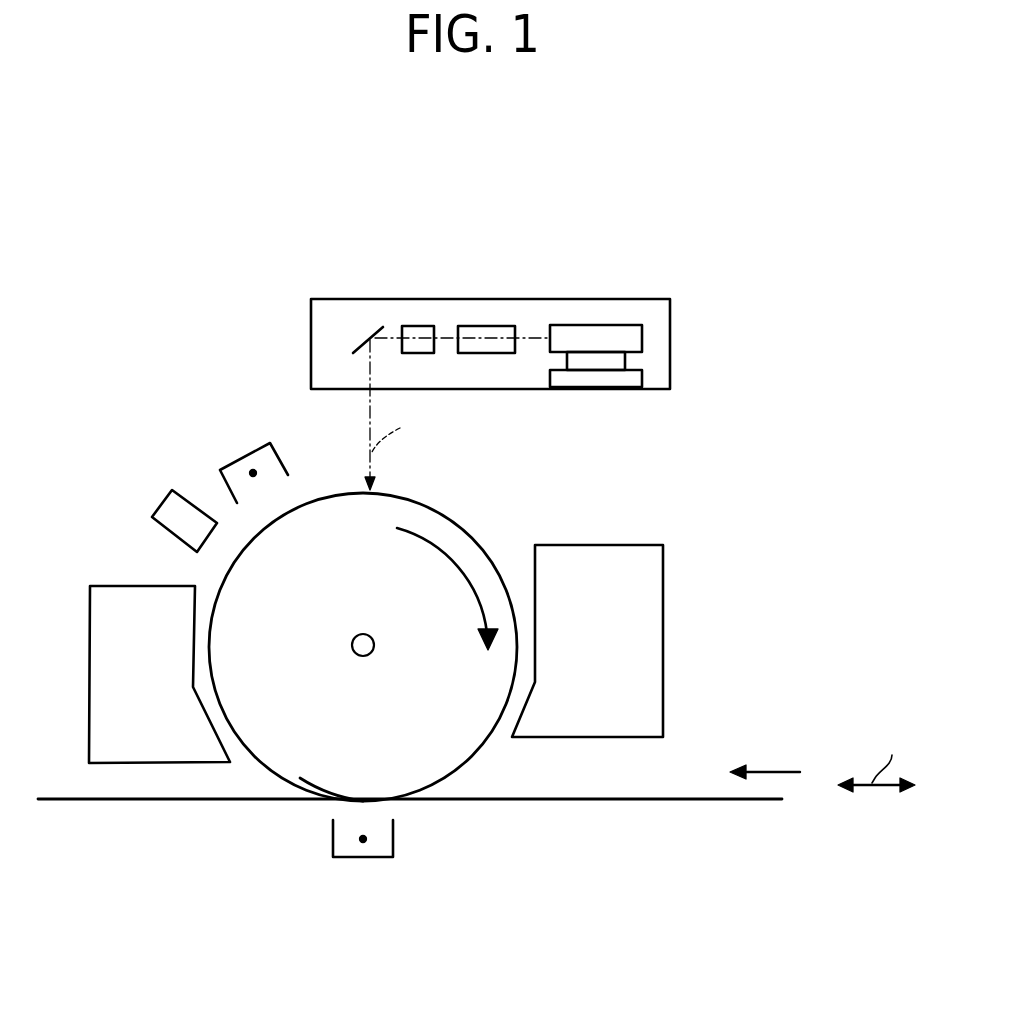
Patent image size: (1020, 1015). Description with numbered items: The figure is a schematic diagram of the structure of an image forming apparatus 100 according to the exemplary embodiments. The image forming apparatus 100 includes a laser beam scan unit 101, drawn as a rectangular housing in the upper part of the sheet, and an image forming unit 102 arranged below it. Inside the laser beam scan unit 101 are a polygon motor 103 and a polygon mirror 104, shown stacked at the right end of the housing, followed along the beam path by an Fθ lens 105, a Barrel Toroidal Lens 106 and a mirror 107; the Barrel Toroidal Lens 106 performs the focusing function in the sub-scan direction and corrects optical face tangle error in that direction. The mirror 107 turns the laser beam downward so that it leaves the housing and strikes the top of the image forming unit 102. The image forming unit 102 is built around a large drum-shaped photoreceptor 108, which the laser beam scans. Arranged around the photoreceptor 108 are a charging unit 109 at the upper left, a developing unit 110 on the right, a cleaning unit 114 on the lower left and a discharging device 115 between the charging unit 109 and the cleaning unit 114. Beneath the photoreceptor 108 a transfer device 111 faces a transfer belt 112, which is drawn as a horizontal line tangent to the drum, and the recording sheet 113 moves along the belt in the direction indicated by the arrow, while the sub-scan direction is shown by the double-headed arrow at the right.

The image forming apparatus 100 is at (585, 195).
The laser beam scan unit 101 is at (310, 332).
The image forming unit 102 is at (499, 519).
The polygon motor 103 is at (642, 378).
The polygon mirror 104 is at (642, 333).
The Fθ lens 105 is at (498, 325).
The Barrel Toroidal Lens 106 is at (418, 325).
The mirror 107 is at (368, 325).
The photoreceptor 108 is at (290, 765).
The charging unit 109 is at (245, 450).
The developing unit 110 is at (665, 570).
The transfer device 111 is at (393, 837).
The transfer belt 112 is at (583, 800).
The recording sheet 113 is at (773, 770).
The cleaning unit 114 is at (110, 592).
The discharging device 115 is at (165, 495).